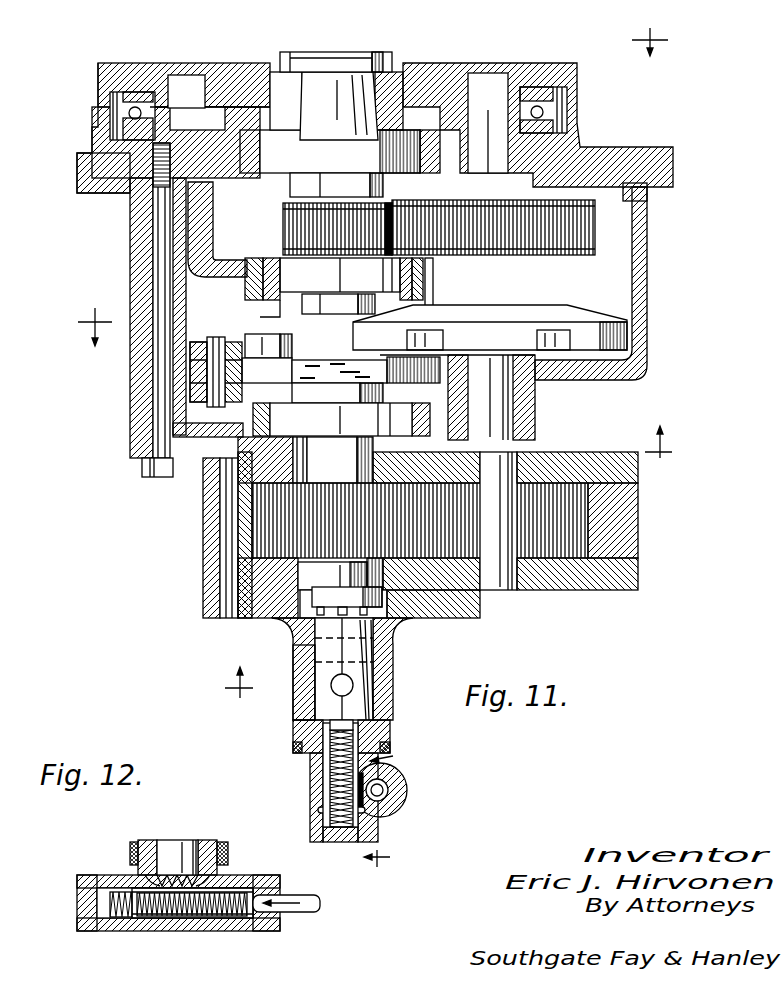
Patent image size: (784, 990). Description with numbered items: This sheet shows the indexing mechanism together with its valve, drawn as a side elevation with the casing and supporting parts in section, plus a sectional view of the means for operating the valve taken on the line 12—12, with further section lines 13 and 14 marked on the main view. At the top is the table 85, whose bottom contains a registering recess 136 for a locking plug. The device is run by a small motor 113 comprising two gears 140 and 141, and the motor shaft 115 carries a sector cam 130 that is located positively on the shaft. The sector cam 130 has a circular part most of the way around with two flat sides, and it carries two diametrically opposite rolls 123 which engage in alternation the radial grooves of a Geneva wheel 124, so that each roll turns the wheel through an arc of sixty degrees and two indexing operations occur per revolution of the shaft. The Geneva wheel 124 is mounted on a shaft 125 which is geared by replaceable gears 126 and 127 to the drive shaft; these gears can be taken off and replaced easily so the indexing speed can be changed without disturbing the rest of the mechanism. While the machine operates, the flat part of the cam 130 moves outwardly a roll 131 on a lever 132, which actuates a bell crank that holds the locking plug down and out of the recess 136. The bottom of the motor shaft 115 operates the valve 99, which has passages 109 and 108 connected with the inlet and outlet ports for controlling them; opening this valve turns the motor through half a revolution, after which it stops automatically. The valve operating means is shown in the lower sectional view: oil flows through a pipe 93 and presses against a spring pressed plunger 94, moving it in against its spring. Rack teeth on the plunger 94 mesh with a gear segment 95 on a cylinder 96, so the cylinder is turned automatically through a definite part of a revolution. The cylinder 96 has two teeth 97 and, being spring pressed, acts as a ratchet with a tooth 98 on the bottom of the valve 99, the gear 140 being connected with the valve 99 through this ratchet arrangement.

In FIG. 11, the table 85 is at (438, 67).
In FIG. 11, the registering recess 136 is at (203, 86).
In FIG. 11, the replaceable gear 127 is at (293, 222).
In FIG. 11, the replaceable gear 126 is at (597, 222).
In FIG. 11, the Geneva wheel 124 is at (628, 331).
In FIG. 11, the shaft 125 is at (497, 408).
In FIG. 11, the roll 123 is at (280, 339).
In FIG. 11, the sector cam 130 is at (284, 372).
In FIG. 11, the lever 132 is at (233, 338).
In FIG. 11, the roll 131 is at (192, 373).
In FIG. 11, the motor shaft 115 is at (327, 473).
In FIG. 11, the gear 140 is at (270, 528).
In FIG. 11, the motor 113 is at (608, 523).
In FIG. 11, the gear 141 is at (563, 547).
In FIG. 11, the passage 108 is at (350, 647).
In FIG. 11, the passage 109 is at (420, 687).
In FIG. 11, the valve 99 is at (322, 683).
In FIG. 11, the tooth 98 is at (342, 713).
In FIG. 11, the tooth 97 is at (370, 717).
In FIG. 11, the cylinder 96 is at (325, 778).
In FIG. 12, the cylinder 96 is at (184, 845).
In FIG. 11, the spring pressed plunger 94 is at (392, 785).
In FIG. 12, the spring pressed plunger 94 is at (198, 918).
In FIG. 12, the gear segment 95 is at (142, 877).
In FIG. 12, the pipe 93 is at (302, 898).
In FIG. 11, the section line 12— 12 is at (391, 804).
In FIG. 11, the section line 13 is at (452, 562).
In FIG. 11, the section line 14 is at (372, 195).